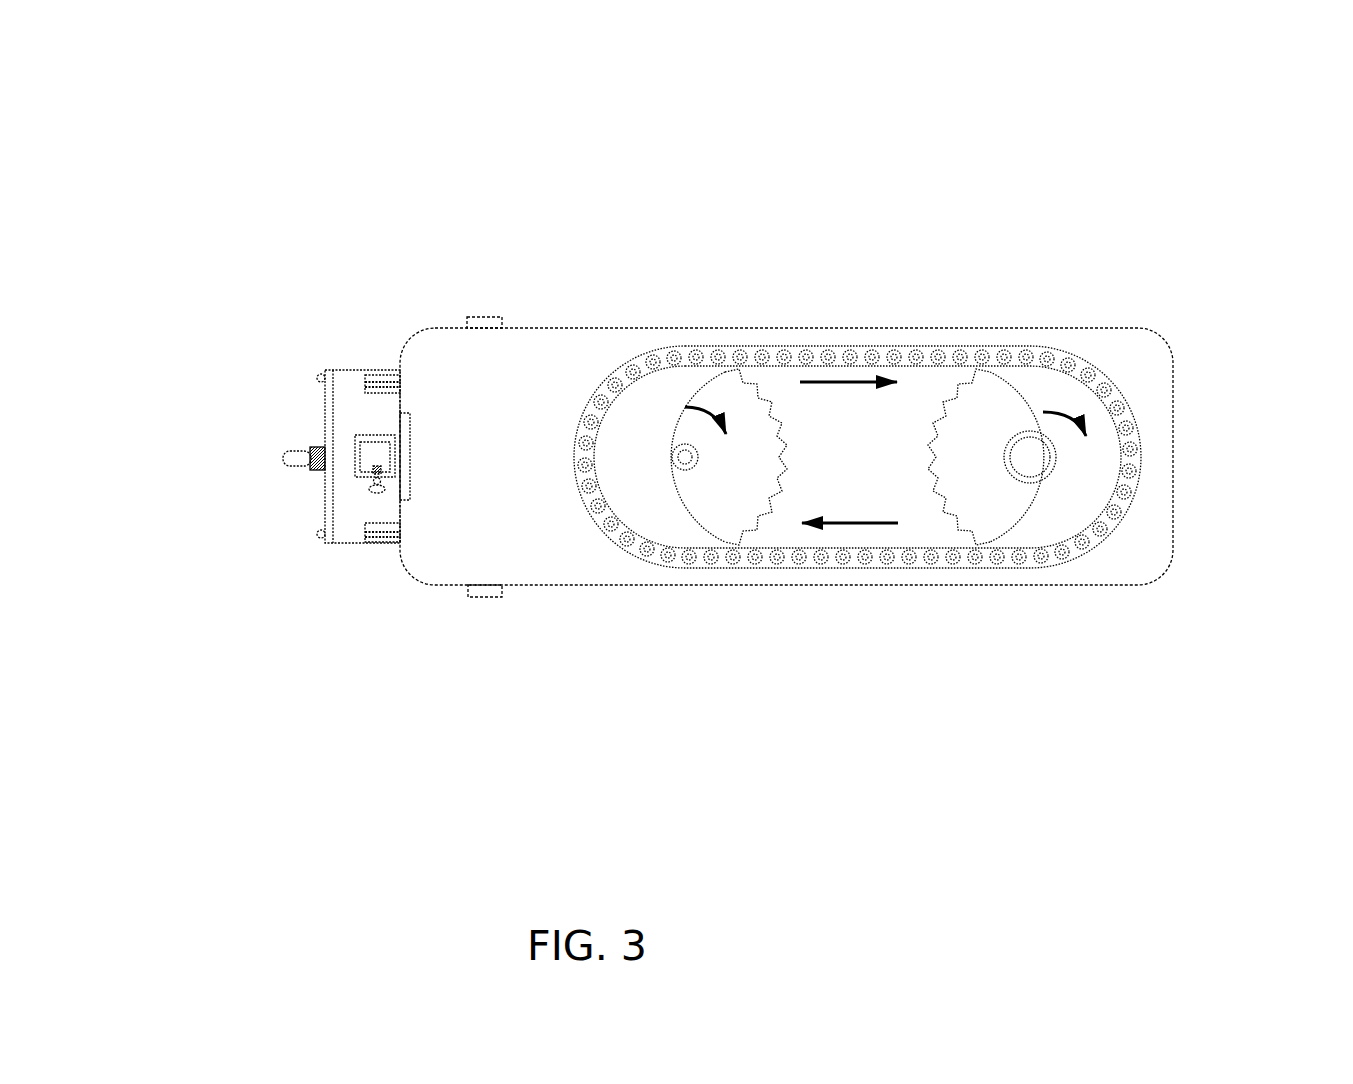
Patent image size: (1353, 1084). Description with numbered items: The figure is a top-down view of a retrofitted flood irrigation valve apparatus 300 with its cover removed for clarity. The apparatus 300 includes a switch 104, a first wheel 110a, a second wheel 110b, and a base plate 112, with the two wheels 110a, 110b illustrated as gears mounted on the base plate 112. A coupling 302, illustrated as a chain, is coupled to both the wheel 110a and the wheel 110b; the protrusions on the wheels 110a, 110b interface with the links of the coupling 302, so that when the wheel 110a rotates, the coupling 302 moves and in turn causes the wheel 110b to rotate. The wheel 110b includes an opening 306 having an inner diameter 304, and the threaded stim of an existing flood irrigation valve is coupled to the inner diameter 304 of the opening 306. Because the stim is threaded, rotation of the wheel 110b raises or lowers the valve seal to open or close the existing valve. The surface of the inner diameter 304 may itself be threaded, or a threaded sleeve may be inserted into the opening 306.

The retrofitted flood irrigation valve apparatus 300 is at (163, 95).
The switch 104 is at (355, 370).
The wheel 110a is at (648, 392).
The wheel 110b is at (1043, 388).
The base plate 112 is at (520, 567).
The coupling 302 is at (862, 350).
The inner diameter 304 is at (1028, 435).
The opening 306 is at (1043, 467).